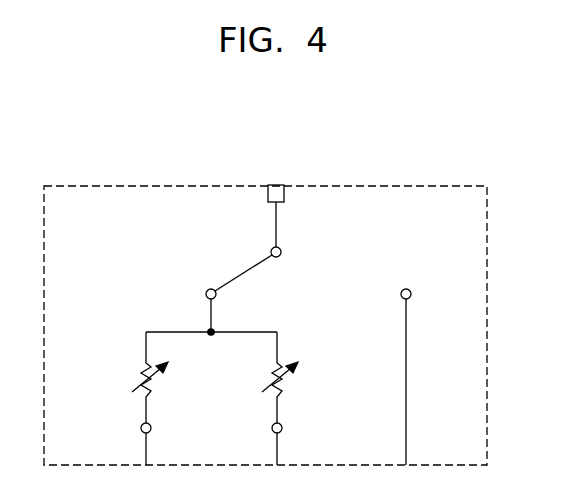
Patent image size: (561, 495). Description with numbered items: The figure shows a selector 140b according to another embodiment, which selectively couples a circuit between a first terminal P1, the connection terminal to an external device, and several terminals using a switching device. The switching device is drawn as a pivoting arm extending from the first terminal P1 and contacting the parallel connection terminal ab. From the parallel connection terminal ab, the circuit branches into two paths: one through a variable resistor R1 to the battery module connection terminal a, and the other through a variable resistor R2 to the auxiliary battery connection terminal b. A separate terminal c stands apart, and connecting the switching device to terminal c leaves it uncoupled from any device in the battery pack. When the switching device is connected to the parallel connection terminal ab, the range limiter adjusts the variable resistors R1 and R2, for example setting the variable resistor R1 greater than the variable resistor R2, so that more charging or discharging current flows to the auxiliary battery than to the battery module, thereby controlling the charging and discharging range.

The selector 140b is at (392, 186).
The first terminal P1 is at (277, 204).
The parallel connection terminal ab is at (229, 291).
The variable resistor R1 is at (136, 377).
The variable resistor R2 is at (266, 377).
The battery module connection terminal a is at (136, 442).
The auxiliary battery connection terminal b is at (285, 442).
The terminal c is at (406, 365).